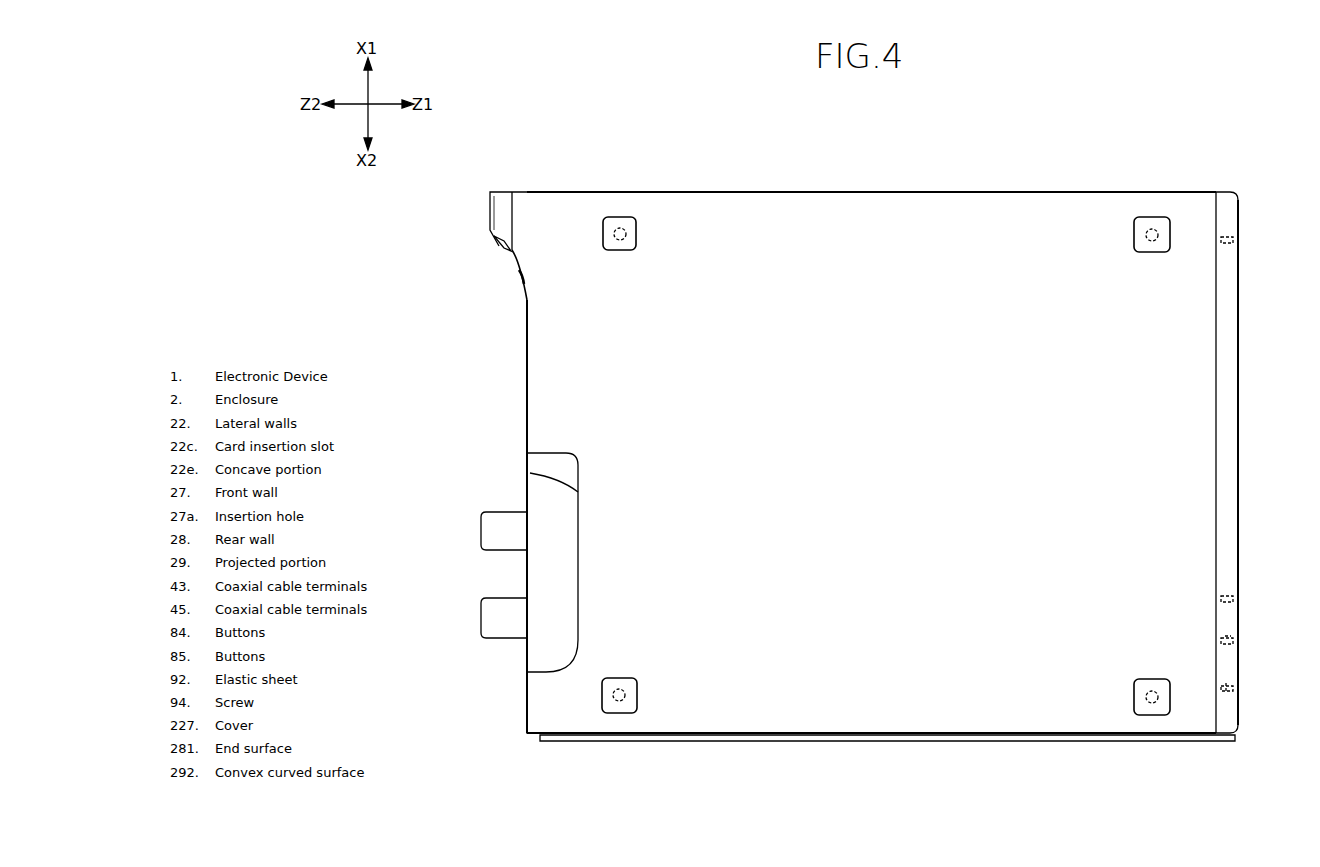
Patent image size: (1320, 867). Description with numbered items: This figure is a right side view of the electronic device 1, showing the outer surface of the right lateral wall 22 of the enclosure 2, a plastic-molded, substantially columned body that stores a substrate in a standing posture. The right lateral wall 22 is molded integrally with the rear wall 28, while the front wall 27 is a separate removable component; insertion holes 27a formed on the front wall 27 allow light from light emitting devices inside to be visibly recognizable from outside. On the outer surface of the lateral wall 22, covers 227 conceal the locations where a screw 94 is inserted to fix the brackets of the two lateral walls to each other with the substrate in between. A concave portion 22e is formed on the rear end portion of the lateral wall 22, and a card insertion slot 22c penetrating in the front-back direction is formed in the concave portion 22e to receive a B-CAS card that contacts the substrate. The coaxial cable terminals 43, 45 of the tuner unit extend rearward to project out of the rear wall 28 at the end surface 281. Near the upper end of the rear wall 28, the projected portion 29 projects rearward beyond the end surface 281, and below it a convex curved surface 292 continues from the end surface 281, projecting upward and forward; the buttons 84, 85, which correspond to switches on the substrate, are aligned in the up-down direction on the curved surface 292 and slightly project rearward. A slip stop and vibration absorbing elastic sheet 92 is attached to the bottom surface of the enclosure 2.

The electronic device 1 is at (652, 96).
The enclosure 2 is at (906, 176).
The lateral wall 22 is at (816, 210).
The card insertion slot 22c is at (556, 573).
The concave portion 22e is at (530, 473).
The front wall 27 is at (1238, 432).
The insertion hole 27a is at (1235, 240).
The rear wall 28 is at (506, 408).
The projected portion 29 is at (498, 211).
The coaxial cable terminal 43 is at (481, 531).
The coaxial cable terminal 45 is at (481, 616).
The button 84 is at (520, 278).
The button 85 is at (500, 248).
The elastic sheet 92 is at (846, 742).
The screw 94 is at (621, 230).
The cover 227 is at (612, 222).
The end surface 281 is at (526, 352).
The convex curved surface 292 is at (514, 262).